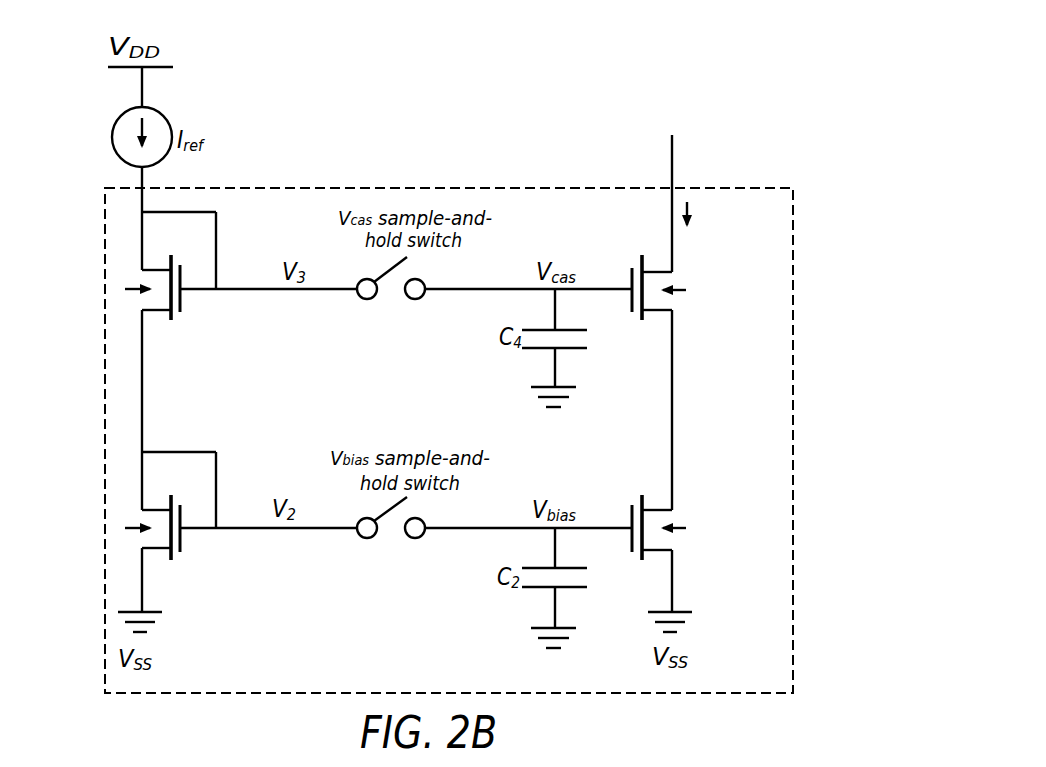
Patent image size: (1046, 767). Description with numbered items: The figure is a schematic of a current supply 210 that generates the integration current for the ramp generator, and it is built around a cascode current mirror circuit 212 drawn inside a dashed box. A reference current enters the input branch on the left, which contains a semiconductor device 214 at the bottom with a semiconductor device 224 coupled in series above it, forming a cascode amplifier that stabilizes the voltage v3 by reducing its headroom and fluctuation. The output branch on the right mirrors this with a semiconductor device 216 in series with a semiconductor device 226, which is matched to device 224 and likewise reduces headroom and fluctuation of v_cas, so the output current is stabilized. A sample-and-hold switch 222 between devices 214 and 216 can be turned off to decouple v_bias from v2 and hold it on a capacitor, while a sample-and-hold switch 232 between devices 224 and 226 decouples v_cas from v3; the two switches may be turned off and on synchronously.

The current supply 210 is at (608, 113).
The cascode current mirror circuit 212 is at (449, 440).
The semiconductor device 214 is at (182, 545).
The semiconductor device 216 is at (630, 543).
The sample-and-hold switch 222 is at (363, 538).
The semiconductor device 224 is at (182, 306).
The semiconductor device 226 is at (630, 302).
The sample-and-hold switch 232 is at (363, 299).